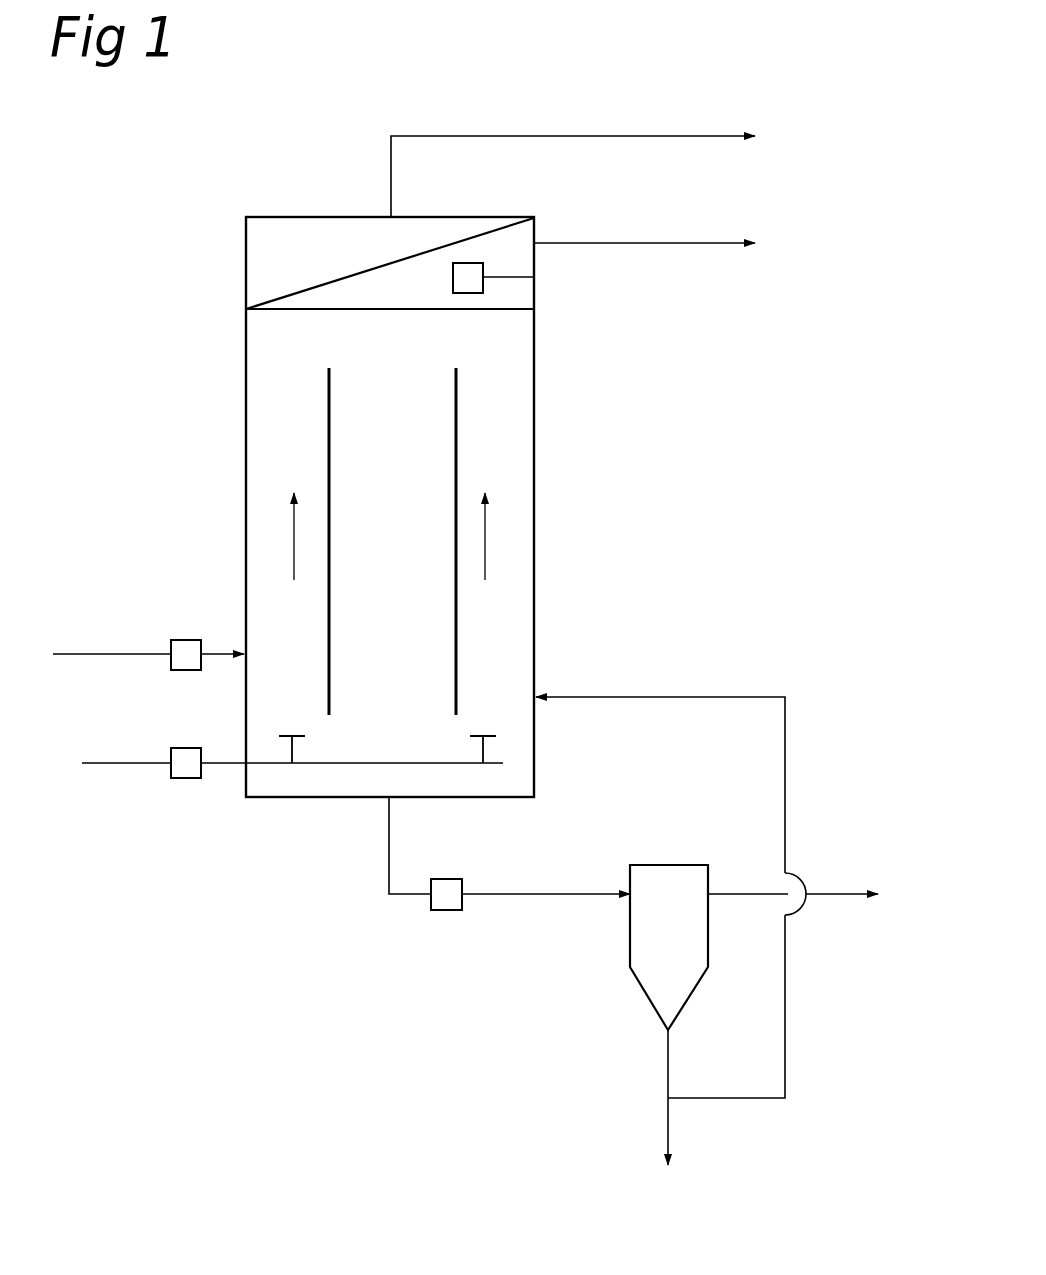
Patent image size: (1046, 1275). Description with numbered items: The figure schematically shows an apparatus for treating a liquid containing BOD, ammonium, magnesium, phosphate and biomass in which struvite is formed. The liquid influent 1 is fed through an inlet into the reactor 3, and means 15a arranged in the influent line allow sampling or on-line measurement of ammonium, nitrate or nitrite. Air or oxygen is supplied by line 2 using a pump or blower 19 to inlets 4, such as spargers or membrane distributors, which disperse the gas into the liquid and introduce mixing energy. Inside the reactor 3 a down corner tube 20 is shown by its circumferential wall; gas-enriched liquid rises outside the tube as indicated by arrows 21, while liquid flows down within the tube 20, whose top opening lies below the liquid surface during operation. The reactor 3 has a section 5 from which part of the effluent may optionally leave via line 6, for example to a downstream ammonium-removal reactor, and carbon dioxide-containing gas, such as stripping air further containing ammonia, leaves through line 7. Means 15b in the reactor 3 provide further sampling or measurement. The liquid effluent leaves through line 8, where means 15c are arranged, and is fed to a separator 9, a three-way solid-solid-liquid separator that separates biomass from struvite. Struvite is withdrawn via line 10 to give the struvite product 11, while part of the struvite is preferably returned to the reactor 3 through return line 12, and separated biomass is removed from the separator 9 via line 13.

The liquid influent 1 is at (133, 654).
The line 2 is at (118, 763).
The reactor 3 is at (246, 423).
The inlets for air or O2 4 is at (288, 735).
The section 5 is at (340, 280).
The line 6 is at (606, 243).
The line 7 is at (513, 136).
The line 8 is at (389, 856).
The separator 9 is at (668, 937).
The line 10 is at (668, 1058).
The struvite product 11 is at (668, 1132).
The line 12 is at (785, 776).
The line 13 is at (823, 898).
The means 15a is at (183, 656).
The means 15b is at (468, 282).
The means 15c is at (447, 892).
The pump or blower 19 is at (185, 758).
The down corner tube 20 is at (329, 407).
The rising liquid 21 is at (294, 537).